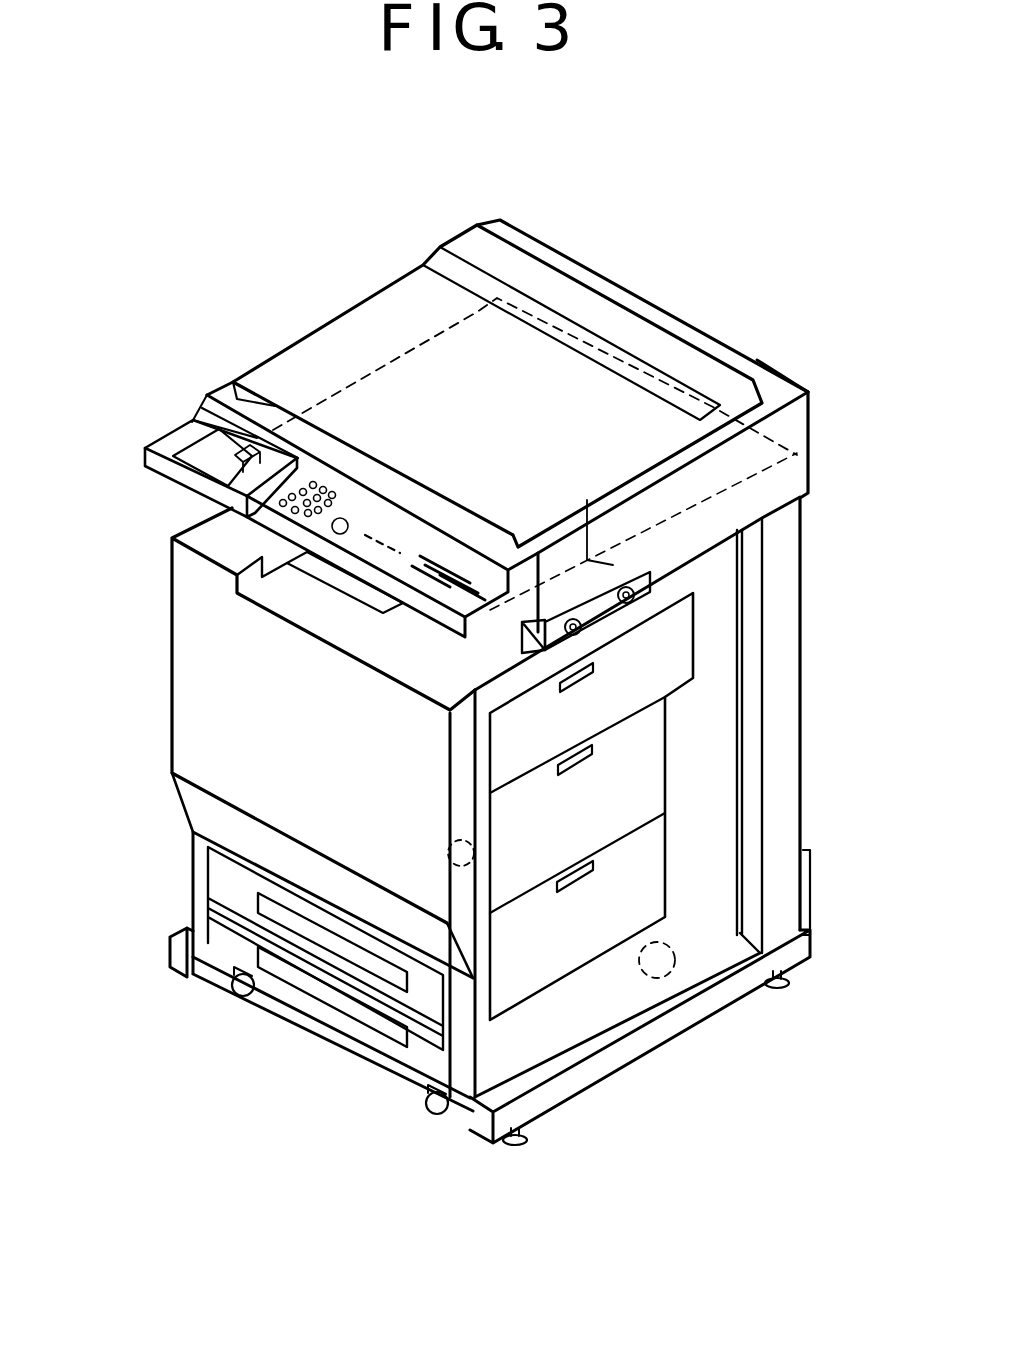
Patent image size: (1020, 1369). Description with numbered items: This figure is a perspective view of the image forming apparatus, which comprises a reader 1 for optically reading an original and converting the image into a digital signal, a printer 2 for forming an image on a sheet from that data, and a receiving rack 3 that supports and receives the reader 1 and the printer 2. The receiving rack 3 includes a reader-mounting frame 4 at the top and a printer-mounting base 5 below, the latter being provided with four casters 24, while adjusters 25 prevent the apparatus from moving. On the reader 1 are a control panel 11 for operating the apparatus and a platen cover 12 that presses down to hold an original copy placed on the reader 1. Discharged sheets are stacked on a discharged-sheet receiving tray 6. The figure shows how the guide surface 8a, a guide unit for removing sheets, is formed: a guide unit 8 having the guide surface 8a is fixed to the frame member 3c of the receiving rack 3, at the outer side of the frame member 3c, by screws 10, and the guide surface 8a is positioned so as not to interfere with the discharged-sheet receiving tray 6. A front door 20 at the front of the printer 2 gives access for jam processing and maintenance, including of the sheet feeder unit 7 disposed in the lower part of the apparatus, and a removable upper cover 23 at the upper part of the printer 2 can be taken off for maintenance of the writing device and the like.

The reader 1 is at (768, 378).
The printer 2 is at (707, 757).
The receiving rack 3 is at (773, 837).
The frame member 3c is at (717, 532).
The reader-mounting frame 4 is at (762, 440).
The printer-mounting base 5 is at (380, 1050).
The discharged-sheet receiving tray 6 is at (347, 596).
The sheet feeder unit 7 is at (230, 889).
The guide unit 8 is at (652, 572).
The guide surface 8a is at (587, 500).
The screws 10 is at (626, 597).
The control panel 11 is at (172, 467).
The platen cover 12 is at (350, 330).
The front door 20 is at (193, 683).
The upper cover 23 is at (440, 660).
The casters 24 is at (430, 1112).
The adjusters 25 is at (530, 1141).